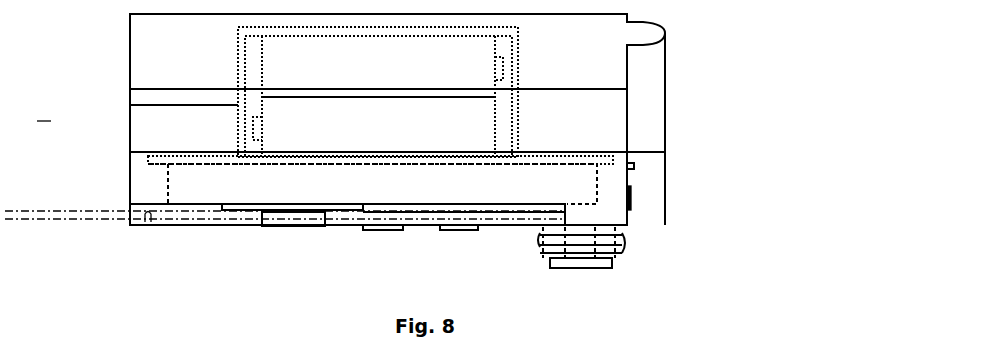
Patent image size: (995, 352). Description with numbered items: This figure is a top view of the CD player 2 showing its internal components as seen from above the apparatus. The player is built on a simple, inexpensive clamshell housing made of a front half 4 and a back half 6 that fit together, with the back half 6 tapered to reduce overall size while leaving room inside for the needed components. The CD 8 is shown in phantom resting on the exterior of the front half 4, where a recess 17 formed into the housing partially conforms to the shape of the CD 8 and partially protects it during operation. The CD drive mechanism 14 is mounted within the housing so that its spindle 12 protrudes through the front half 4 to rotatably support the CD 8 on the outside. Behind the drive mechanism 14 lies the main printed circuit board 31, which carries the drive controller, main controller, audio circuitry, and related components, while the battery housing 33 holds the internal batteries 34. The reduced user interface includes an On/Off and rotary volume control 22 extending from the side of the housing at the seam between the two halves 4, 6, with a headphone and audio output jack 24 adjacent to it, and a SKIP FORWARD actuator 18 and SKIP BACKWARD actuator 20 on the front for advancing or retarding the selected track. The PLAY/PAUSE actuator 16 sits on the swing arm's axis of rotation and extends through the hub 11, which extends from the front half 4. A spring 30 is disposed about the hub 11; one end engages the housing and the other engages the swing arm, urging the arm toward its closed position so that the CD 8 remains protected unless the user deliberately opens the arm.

The CD player 2 is at (44, 111).
The front half 4 is at (130, 192).
The back half 6 is at (130, 58).
The CD 8 is at (62, 220).
The hub 11 is at (622, 235).
The spindle 12 is at (258, 216).
The CD drive mechanism 14 is at (168, 181).
The PLAY/PAUSE actuator 16 is at (579, 268).
The recess 17 is at (148, 214).
The SKIP FORWARD actuator 18 is at (467, 232).
The SKIP BACKWARD actuator 20 is at (392, 232).
The On/Off and rotary volume control 22 is at (634, 166).
The headphone and audio output jack 24 is at (632, 200).
The spring 30 is at (622, 252).
The main printed circuit board 31 is at (613, 155).
The battery housing 33 is at (518, 80).
The internal batteries 34 is at (255, 117).